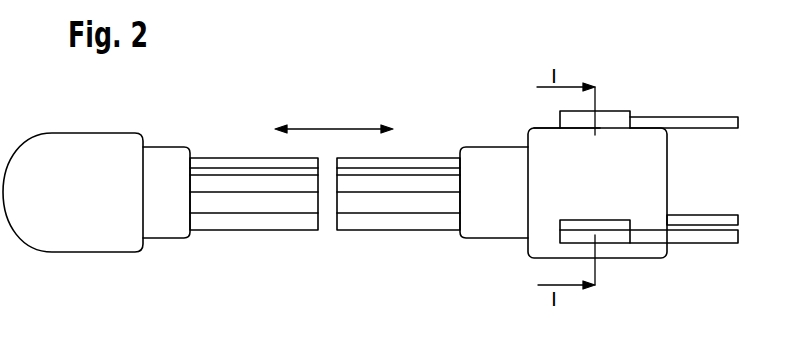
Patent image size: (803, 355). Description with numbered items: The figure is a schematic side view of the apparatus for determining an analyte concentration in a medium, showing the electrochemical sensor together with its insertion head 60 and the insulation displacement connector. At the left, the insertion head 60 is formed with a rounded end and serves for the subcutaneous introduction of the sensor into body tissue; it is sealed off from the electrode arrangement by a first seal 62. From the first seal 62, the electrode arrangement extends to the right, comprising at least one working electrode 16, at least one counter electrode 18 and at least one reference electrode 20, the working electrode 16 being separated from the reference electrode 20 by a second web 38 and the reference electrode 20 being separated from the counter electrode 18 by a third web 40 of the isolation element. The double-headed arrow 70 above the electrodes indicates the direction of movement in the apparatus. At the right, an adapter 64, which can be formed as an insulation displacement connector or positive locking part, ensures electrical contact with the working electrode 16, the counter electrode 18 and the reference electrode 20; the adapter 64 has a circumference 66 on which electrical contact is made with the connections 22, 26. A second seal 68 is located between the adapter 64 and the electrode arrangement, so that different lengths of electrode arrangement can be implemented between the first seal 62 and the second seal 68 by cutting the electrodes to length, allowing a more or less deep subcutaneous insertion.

The working electrode 16 is at (253, 165).
The counter electrode 18 is at (705, 220).
The reference electrode 20 is at (265, 205).
The connection 22 is at (617, 122).
The connection 26 is at (618, 240).
The second web 38 is at (215, 168).
The third web 40 is at (215, 222).
The insertion head 60 is at (95, 238).
The first seal 62 is at (160, 228).
The adapter 64 is at (552, 147).
The circumference 66 is at (545, 127).
The second seal 68 is at (497, 230).
The double-headed arrow 70 is at (332, 127).